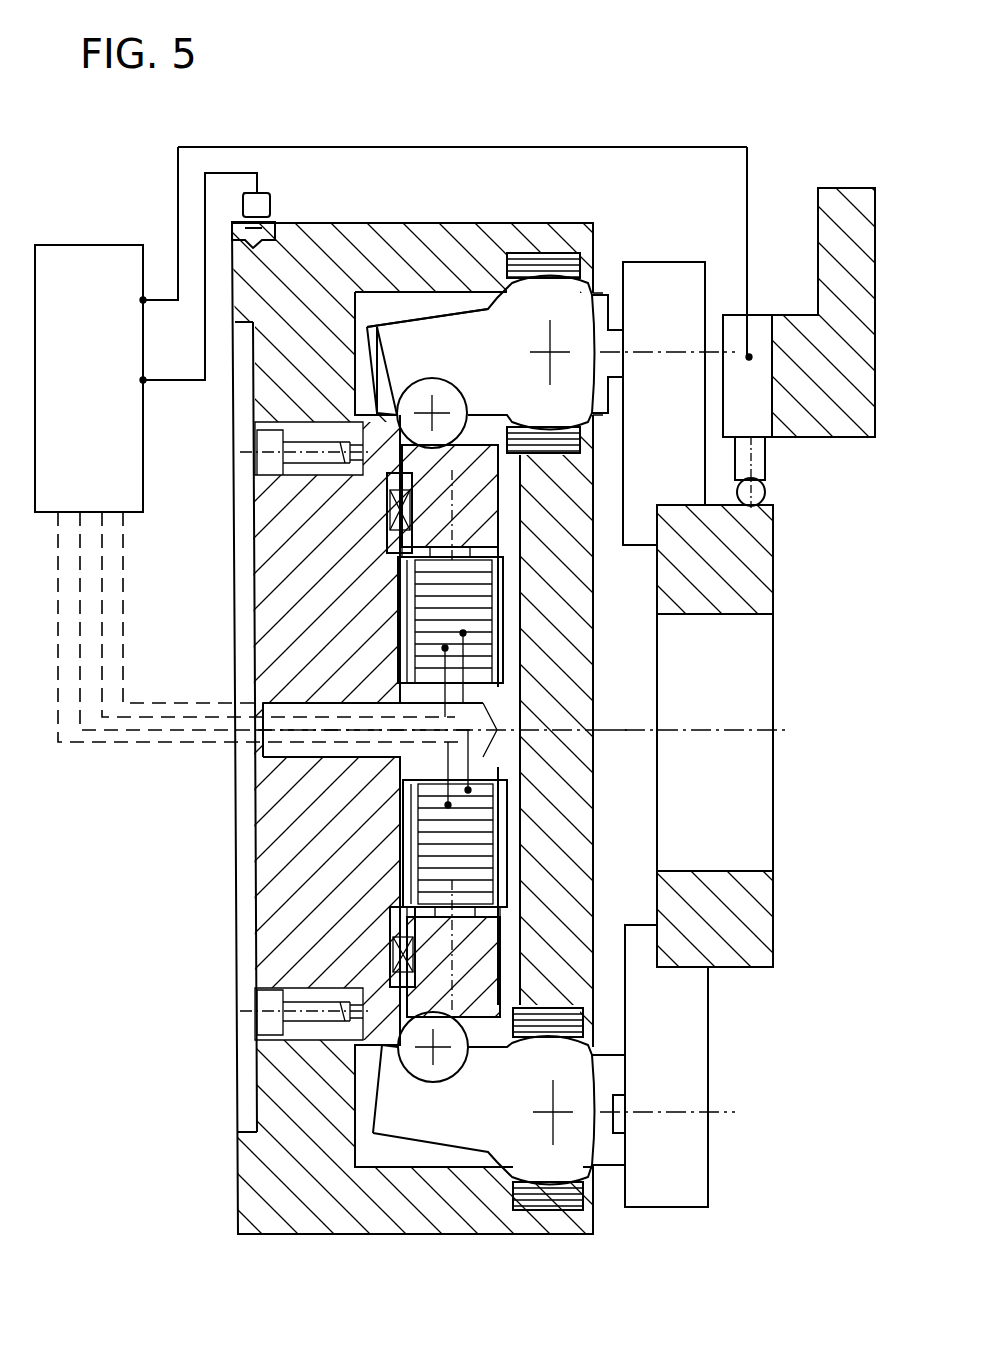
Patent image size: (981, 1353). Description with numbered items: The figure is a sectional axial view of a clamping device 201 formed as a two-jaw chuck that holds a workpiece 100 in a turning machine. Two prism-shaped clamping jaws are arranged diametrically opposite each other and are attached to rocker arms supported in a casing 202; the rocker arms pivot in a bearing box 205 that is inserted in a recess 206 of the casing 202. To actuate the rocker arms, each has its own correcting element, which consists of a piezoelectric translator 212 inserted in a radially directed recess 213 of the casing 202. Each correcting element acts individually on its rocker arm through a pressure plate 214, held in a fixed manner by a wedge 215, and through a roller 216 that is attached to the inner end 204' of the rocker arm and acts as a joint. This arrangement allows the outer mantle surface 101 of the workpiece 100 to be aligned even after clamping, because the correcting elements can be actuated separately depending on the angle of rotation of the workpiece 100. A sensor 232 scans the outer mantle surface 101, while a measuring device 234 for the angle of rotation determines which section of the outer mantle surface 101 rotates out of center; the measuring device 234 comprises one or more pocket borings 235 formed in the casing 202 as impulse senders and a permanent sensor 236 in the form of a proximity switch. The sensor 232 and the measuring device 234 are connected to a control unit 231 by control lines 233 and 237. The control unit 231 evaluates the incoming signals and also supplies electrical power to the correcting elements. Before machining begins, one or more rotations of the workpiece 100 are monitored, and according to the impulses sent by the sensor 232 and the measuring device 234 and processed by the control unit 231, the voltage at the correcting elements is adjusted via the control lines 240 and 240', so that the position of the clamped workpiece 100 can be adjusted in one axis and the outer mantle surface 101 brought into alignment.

The workpiece 100 is at (740, 571).
The outer mantle surface 101 is at (746, 980).
The clamping device 201 is at (496, 98).
The casing 202 is at (353, 212).
The inner end of the rocker arm 204' is at (427, 248).
The bearing box 205 is at (525, 265).
The recess 206 is at (595, 240).
The piezoelectric translator 212 is at (400, 650).
The radially directed recesses 213 is at (405, 900).
The pressure plate 214 is at (400, 545).
The wedge 215 is at (390, 507).
The roller 216 is at (410, 400).
The control unit 231 is at (75, 243).
The sensor 232 is at (775, 471).
The control line 233 is at (592, 147).
The measuring device 234 is at (283, 156).
The pocket borings 235 is at (236, 226).
The permanent sensor 236 is at (277, 206).
The control line 237 is at (218, 166).
The control line 240 is at (264, 627).
The control line 240' is at (270, 761).